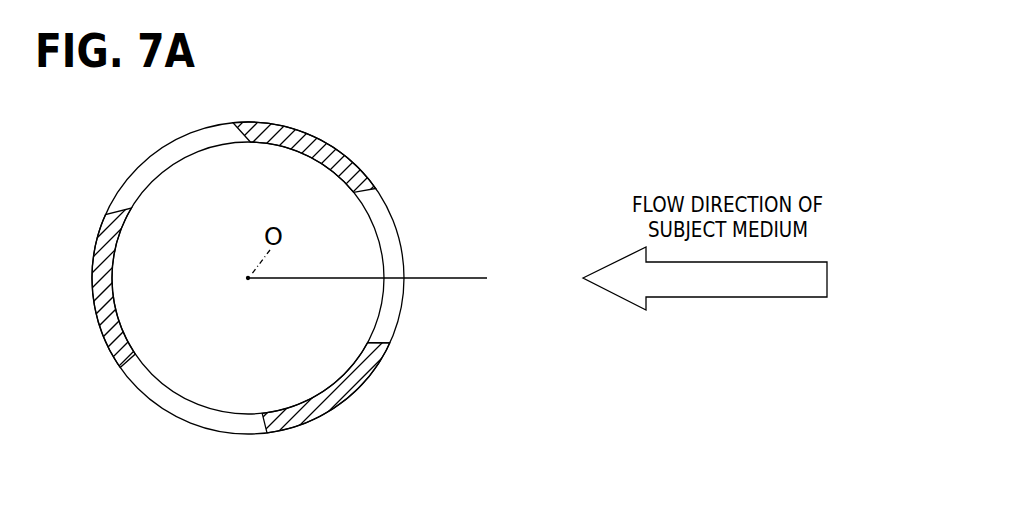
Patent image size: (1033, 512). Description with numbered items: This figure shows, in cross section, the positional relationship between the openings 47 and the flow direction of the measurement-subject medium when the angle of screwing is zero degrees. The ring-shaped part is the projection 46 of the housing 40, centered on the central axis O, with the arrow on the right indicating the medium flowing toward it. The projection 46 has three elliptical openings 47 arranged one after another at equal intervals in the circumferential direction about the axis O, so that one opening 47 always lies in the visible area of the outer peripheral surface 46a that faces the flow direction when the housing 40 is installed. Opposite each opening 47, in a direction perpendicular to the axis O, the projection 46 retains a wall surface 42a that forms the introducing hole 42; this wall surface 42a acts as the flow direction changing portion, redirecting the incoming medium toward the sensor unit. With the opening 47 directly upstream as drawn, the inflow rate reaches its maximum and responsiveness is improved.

The introducing hole 42 is at (233, 343).
The wall surface 42a is at (292, 154).
The projection 46 is at (357, 385).
The housing 40 is at (372, 275).
The outer peripheral surface 46a is at (333, 410).
The openings 47 is at (117, 214).